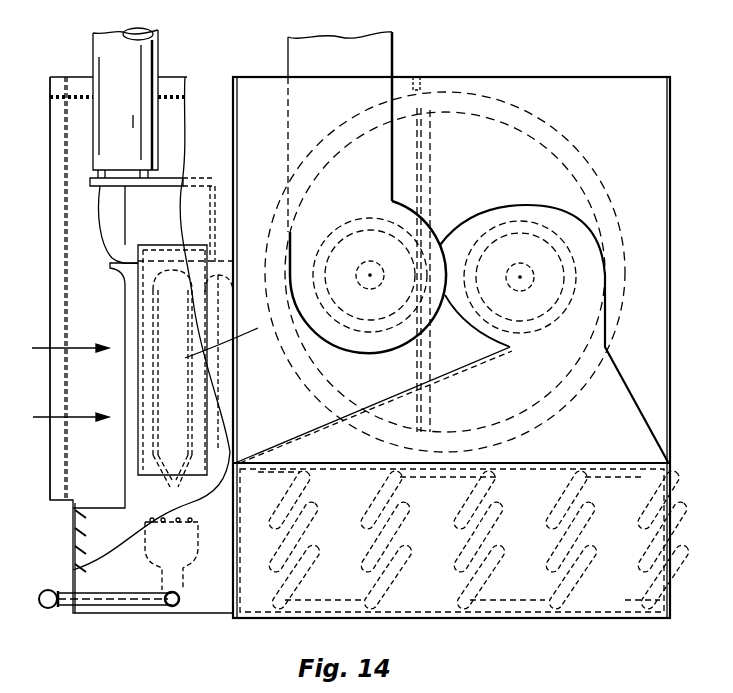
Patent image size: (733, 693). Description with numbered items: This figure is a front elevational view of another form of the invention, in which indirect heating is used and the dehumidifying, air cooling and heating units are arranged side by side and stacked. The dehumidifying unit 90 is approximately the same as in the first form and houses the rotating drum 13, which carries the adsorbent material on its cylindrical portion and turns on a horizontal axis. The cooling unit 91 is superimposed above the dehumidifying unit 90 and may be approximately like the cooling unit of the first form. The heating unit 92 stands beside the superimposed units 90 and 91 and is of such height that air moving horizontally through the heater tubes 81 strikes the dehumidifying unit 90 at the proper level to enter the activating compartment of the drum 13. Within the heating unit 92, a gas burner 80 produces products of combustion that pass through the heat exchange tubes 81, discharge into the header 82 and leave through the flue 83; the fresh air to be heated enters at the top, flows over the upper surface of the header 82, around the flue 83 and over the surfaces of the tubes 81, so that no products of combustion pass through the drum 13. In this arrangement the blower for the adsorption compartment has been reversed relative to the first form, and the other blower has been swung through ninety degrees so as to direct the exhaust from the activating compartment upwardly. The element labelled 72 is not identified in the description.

The drum 13 is at (598, 172).
The cut-off plate 72 is at (373, 408).
The gas burner 80 is at (145, 532).
The heat exchange tubes 81 is at (185, 378).
The header 82 is at (128, 235).
The flue 83 is at (147, 70).
The dehumidifying unit 90 is at (667, 305).
The cooling unit 91 is at (663, 530).
The heating unit 92 is at (52, 262).